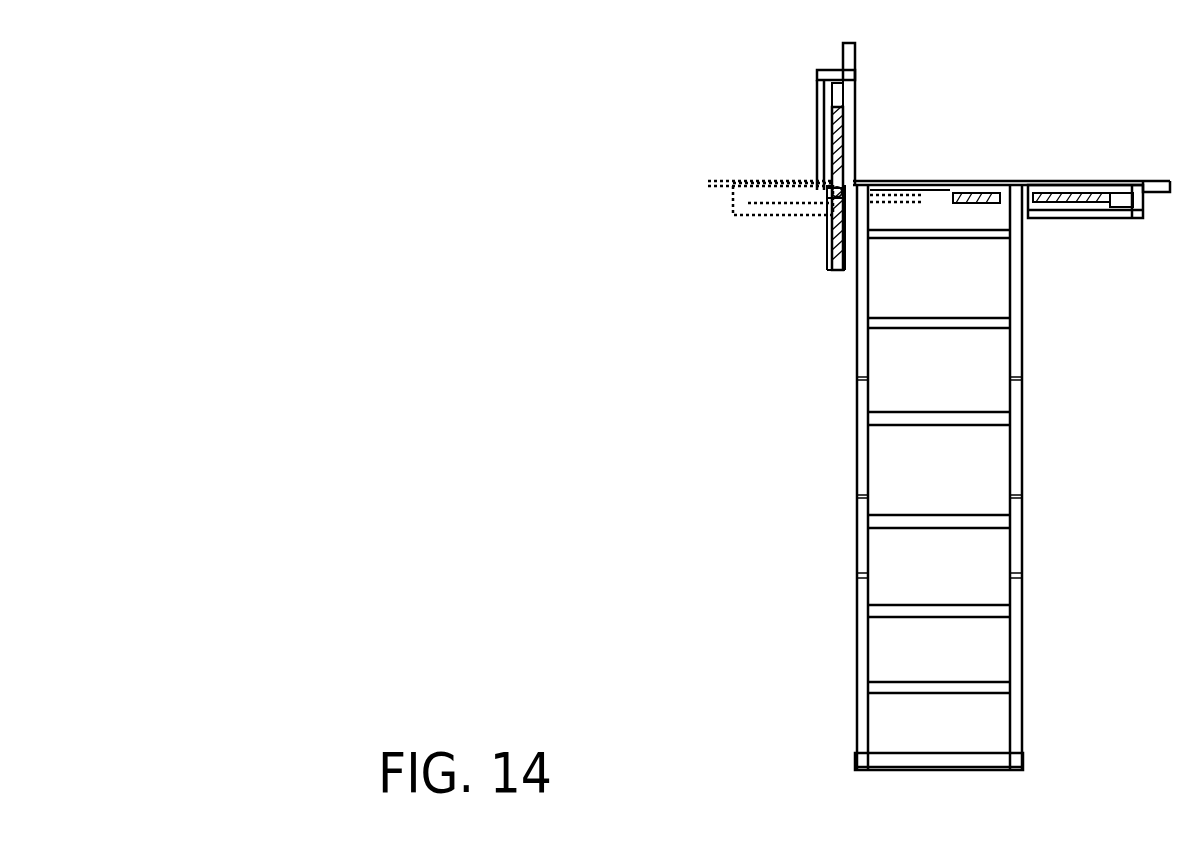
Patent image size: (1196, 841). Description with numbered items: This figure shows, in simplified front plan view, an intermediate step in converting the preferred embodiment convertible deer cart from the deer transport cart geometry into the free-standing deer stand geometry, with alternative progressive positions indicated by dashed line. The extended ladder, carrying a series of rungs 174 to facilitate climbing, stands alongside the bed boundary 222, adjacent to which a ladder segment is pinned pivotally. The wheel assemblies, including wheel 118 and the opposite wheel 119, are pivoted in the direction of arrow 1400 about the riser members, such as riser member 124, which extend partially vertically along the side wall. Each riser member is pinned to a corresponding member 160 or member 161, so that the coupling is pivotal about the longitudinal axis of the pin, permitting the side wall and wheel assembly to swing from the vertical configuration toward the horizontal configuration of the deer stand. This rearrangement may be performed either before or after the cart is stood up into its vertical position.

The arrow 1400 is at (813, 55).
The riser member 124 is at (852, 180).
The bed boundary 222 is at (892, 183).
The member 160 is at (1032, 183).
The wheel 119 is at (1070, 208).
The member 161 is at (830, 195).
The wheel 118 is at (833, 268).
The rungs 174 is at (890, 322).